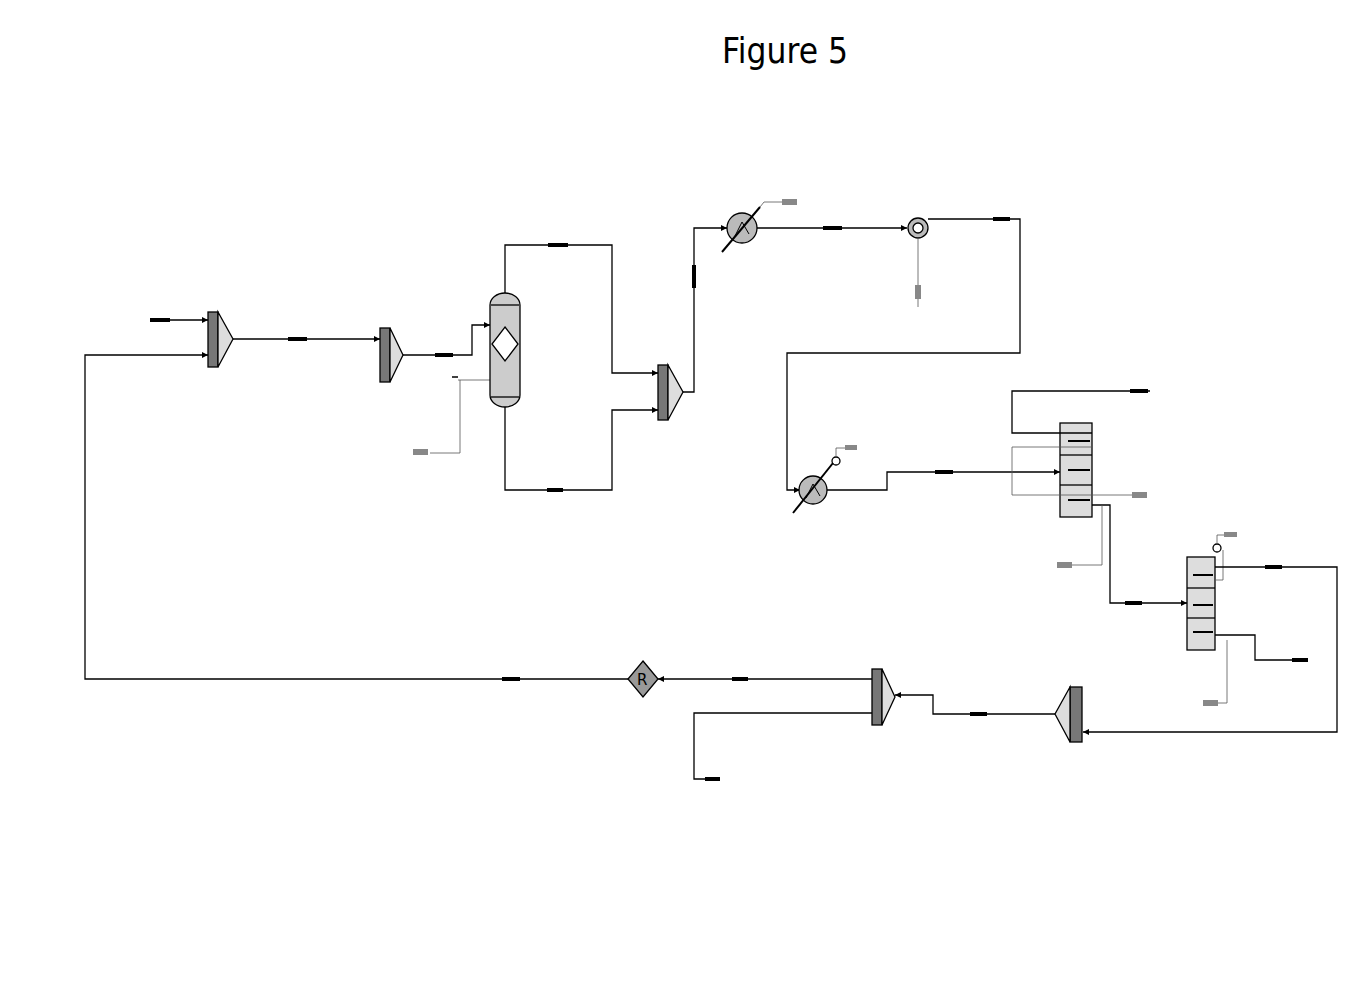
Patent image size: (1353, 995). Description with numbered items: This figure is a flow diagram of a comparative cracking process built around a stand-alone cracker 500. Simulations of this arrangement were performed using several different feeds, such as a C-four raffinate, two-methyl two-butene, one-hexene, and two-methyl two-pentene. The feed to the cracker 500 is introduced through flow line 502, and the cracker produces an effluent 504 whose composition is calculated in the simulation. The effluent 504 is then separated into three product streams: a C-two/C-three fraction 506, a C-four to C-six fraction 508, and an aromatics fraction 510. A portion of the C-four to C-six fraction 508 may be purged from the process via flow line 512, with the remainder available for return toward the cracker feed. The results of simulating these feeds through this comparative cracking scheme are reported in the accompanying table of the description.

The cracker 500 is at (528, 350).
The flow line 502 is at (171, 307).
The effluent 504 is at (832, 244).
The C2/C3 fraction 506 is at (1082, 396).
The C4-C6 fraction 508 is at (1210, 637).
The aromatics fraction 510 is at (1261, 667).
The flow line 512 is at (780, 765).